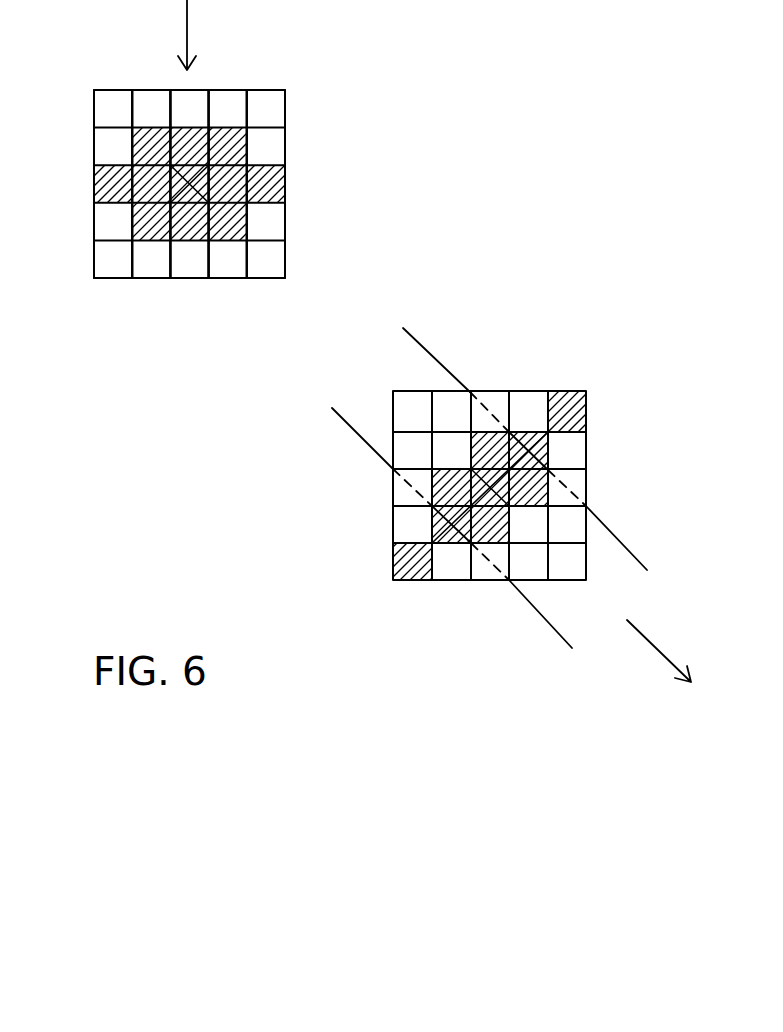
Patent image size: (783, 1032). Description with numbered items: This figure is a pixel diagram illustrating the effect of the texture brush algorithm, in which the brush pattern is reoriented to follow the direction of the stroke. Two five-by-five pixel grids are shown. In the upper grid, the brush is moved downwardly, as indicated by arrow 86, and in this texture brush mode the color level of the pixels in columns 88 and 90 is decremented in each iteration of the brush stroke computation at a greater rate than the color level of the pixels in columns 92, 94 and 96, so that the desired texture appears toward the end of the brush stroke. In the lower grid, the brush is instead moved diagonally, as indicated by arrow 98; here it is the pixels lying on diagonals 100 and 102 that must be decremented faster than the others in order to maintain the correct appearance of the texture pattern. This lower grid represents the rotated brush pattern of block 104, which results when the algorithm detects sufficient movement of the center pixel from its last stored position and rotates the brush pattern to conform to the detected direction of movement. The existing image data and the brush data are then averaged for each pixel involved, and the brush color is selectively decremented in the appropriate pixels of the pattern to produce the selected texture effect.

The arrow 86 is at (187, 32).
The column 88 is at (157, 296).
The column 90 is at (236, 296).
The column 92 is at (120, 296).
The column 94 is at (196, 296).
The column 96 is at (279, 296).
The arrow 98 is at (650, 642).
The diagonal 100 is at (347, 423).
The diagonal 102 is at (433, 357).
The block 104 is at (621, 461).